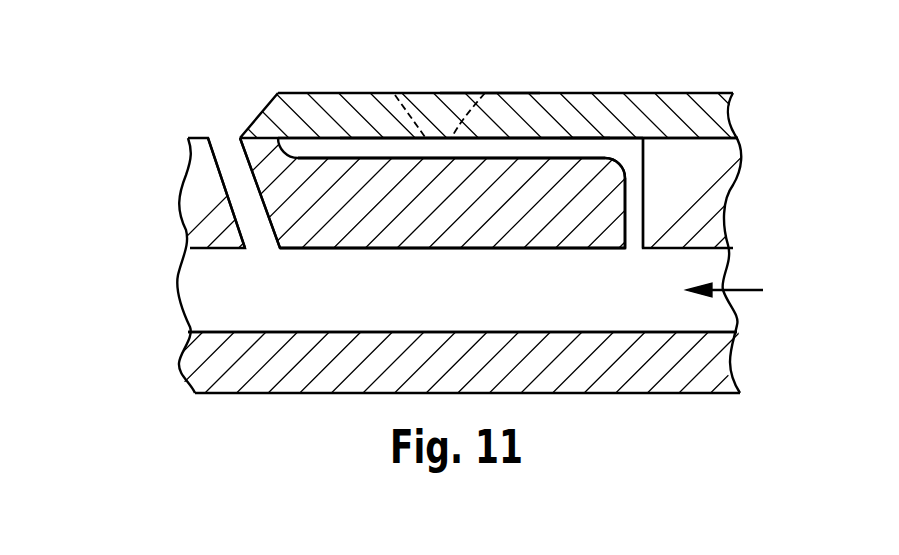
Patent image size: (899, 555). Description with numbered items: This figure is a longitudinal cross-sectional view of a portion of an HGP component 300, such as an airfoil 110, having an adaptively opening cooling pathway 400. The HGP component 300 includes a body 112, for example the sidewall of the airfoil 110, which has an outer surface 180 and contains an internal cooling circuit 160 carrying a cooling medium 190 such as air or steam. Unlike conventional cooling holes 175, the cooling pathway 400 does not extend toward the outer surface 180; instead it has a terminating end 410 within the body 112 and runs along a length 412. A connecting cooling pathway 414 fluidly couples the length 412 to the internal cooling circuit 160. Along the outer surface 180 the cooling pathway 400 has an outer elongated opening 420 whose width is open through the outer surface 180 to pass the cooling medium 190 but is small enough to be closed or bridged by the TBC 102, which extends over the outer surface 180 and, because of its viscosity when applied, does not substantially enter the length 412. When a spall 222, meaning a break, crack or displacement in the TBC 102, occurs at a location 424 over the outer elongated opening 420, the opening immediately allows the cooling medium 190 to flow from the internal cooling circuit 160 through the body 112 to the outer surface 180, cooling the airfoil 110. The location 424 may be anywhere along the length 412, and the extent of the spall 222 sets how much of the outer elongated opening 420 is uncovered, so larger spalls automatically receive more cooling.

The TBC 102 is at (710, 113).
The airfoil 110 is at (695, 175).
The body 112 is at (765, 193).
The internal cooling circuit 160 is at (553, 303).
The cooling holes 175 is at (227, 143).
The outer surface 180 is at (681, 138).
The cooling medium 190 is at (748, 289).
The spall 222 is at (431, 112).
The HGP component 300 is at (158, 183).
The cooling pathway 400 is at (612, 125).
The terminating end 410 is at (298, 145).
The length 412 is at (537, 147).
The connecting cooling pathway 414 is at (633, 235).
The outer elongated opening 420 is at (367, 140).
The location 424 is at (486, 110).